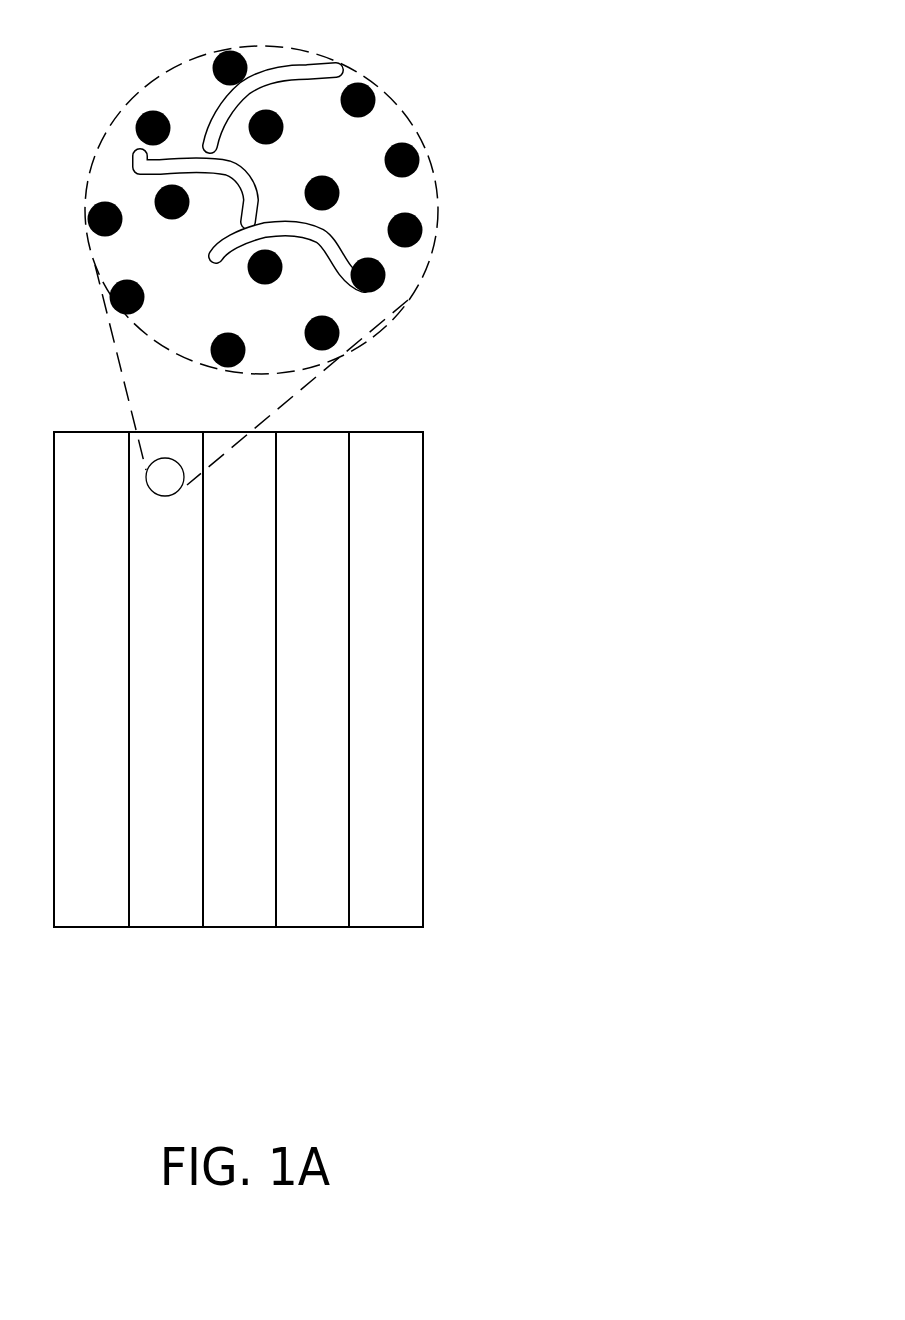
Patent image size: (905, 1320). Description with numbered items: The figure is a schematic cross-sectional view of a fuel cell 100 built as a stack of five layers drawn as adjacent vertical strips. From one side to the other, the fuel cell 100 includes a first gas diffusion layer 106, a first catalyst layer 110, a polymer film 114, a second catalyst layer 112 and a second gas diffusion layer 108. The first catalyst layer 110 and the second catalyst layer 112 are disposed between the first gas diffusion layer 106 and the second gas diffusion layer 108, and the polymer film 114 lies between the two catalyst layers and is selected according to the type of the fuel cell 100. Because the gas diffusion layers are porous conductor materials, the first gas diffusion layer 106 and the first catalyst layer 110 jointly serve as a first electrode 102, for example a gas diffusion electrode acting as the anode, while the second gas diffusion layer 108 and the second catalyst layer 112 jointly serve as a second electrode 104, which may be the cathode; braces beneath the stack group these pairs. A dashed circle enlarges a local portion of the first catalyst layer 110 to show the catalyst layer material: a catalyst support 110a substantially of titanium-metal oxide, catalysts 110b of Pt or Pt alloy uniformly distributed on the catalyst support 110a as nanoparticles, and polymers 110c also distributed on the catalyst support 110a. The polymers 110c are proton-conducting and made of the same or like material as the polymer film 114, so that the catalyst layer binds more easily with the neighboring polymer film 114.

The fuel cell 100 is at (578, 1051).
The first electrode 102 is at (76, 1033).
The second electrode 104 is at (298, 1033).
The first gas diffusion layer 106 is at (100, 910).
The second gas diffusion layer 108 is at (393, 910).
The first catalyst layer 110 is at (173, 910).
The catalyst support 110a is at (388, 128).
The catalysts 110b is at (221, 52).
The polymers 110c is at (298, 76).
The second catalyst layer 112 is at (318, 910).
The polymer film 114 is at (245, 910).